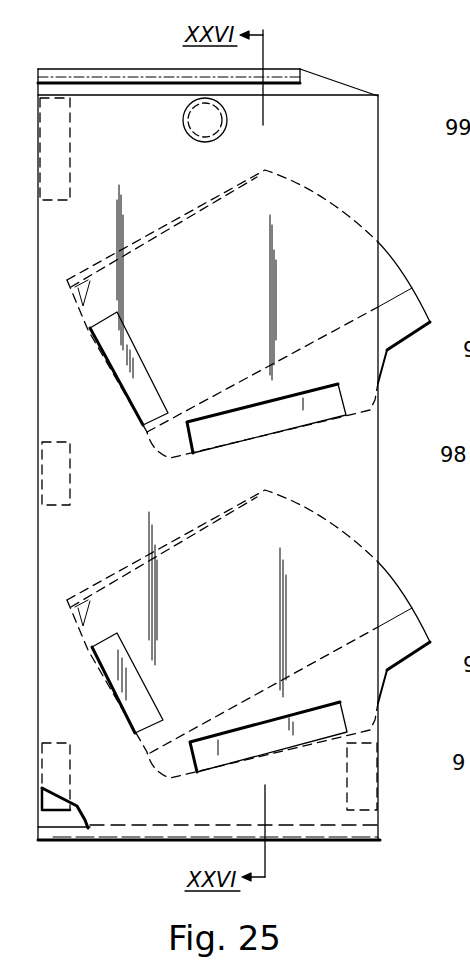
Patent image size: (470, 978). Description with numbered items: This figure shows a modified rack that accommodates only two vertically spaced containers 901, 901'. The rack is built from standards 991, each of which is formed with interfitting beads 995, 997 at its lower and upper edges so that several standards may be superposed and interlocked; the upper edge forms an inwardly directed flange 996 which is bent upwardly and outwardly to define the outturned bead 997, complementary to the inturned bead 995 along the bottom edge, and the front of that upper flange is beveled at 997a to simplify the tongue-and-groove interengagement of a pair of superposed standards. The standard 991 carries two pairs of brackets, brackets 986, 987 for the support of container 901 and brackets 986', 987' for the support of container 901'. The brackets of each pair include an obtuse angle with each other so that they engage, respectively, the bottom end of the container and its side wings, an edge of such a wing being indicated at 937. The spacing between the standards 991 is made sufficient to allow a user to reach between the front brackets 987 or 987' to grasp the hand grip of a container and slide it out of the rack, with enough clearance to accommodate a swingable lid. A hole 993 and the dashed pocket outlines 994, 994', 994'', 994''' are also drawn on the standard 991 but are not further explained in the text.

The container 901 is at (417, 616).
The container 901' is at (421, 312).
The flap edge 937 is at (384, 683).
The bracket 986 is at (109, 683).
The bracket 986' is at (107, 368).
The front bracket 987 is at (268, 749).
The front bracket 987' is at (266, 426).
The standard 991 is at (362, 166).
The hole 993 is at (183, 115).
The pocket 994 is at (89, 149).
The pocket 994' is at (398, 785).
The pocket 994'' is at (55, 821).
The pocket 994''' is at (99, 473).
The bead 995 is at (82, 836).
The flange 996 is at (328, 96).
The bead 997 is at (314, 82).
The bevel 997a is at (340, 82).